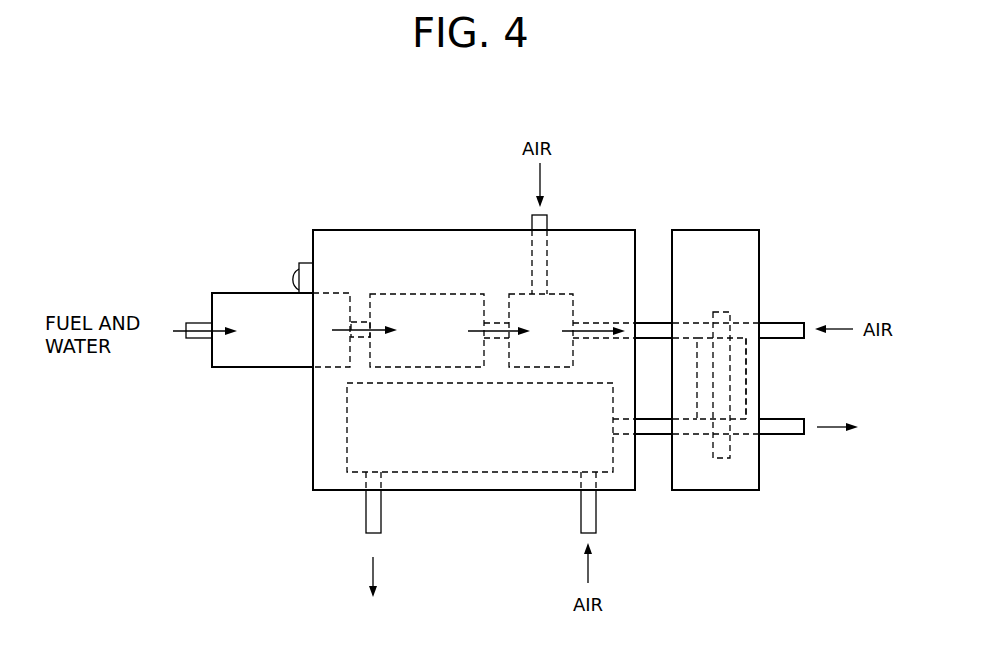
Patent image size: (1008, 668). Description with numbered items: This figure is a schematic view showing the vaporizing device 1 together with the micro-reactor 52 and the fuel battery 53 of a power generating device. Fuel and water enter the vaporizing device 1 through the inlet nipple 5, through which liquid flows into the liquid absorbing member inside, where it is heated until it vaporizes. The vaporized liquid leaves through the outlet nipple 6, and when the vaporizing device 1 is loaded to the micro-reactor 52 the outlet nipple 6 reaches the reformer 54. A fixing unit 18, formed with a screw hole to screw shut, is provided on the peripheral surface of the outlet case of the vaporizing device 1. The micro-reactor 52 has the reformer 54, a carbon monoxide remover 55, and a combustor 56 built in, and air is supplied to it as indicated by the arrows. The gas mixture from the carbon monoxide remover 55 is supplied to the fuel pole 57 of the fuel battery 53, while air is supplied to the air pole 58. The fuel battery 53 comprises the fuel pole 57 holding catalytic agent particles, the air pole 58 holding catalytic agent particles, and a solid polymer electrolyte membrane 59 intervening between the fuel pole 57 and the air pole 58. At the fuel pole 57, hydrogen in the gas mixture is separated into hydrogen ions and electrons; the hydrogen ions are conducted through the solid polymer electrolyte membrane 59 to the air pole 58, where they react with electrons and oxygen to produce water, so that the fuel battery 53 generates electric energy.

The vaporizing device 1 is at (243, 293).
The inlet nipple 5 is at (195, 322).
The fixing unit 18 is at (307, 268).
The outlet nipple 6 is at (358, 322).
The micro-reactor 52 is at (423, 230).
The reformer 54 is at (453, 294).
The carbon monoxide remover 55 is at (560, 293).
The combustor 56 is at (490, 472).
The fuel battery 53 is at (710, 230).
The fuel pole 57 is at (710, 403).
The air pole 58 is at (738, 395).
The solid polymer electrolyte membrane 59 is at (717, 372).